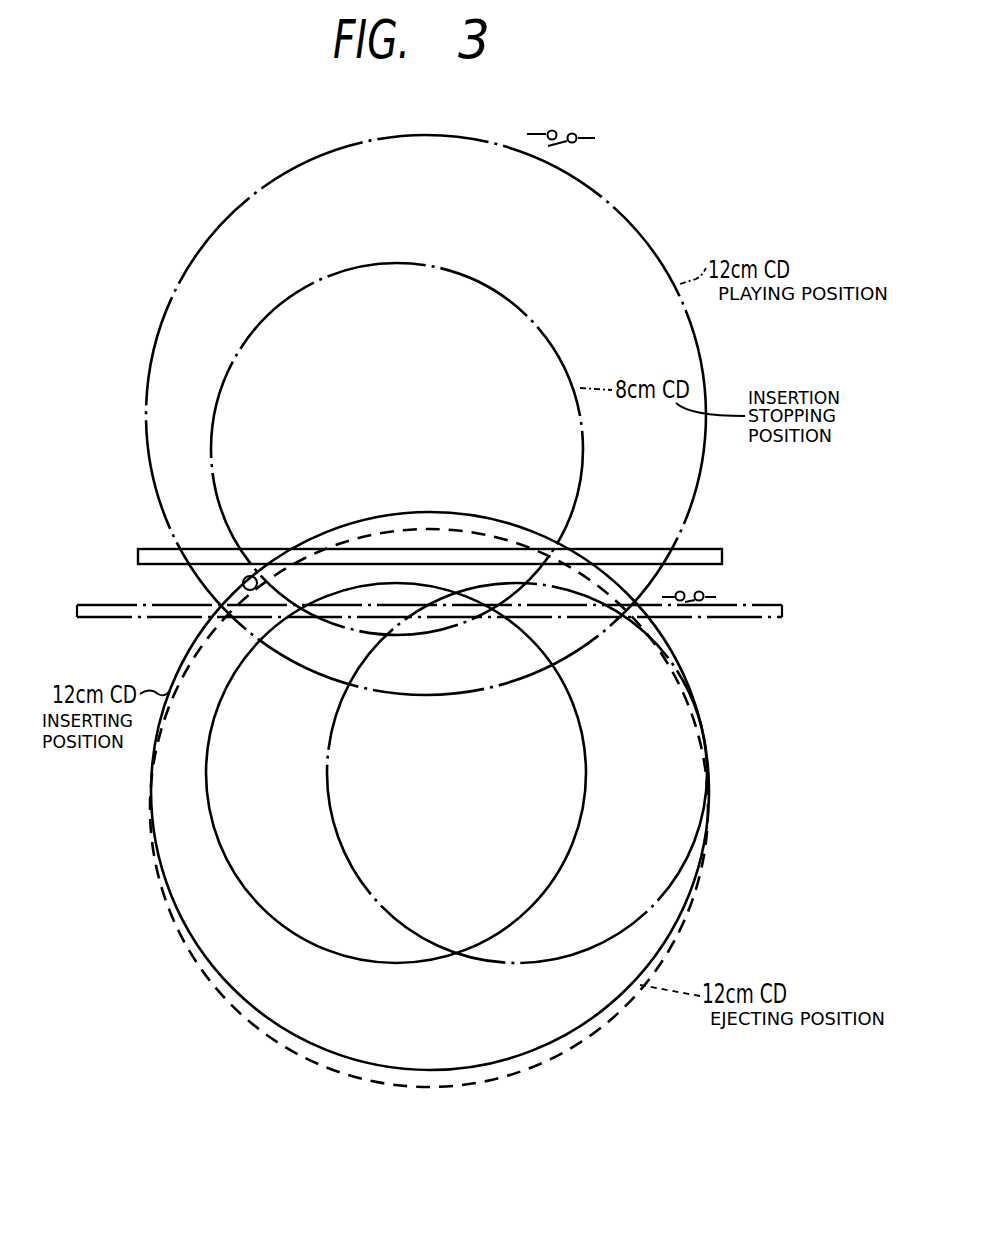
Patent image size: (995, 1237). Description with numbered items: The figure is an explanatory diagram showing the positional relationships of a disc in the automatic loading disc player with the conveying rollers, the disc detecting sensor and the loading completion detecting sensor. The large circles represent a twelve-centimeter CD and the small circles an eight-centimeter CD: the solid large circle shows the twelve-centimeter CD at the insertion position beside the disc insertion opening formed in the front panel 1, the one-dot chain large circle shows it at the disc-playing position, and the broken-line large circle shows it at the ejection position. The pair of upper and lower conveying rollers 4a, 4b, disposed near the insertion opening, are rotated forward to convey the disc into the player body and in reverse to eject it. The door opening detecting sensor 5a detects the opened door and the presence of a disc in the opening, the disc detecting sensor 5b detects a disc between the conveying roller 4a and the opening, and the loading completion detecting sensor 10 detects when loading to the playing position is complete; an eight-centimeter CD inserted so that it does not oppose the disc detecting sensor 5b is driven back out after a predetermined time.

The front panel 1 is at (752, 619).
The conveying roller 4a is at (713, 548).
The conveying roller 4b is at (480, 537).
The door opening detecting sensor 5a is at (690, 591).
The disc detecting sensor 5b is at (244, 582).
The loading completion detecting sensor 10 is at (562, 132).